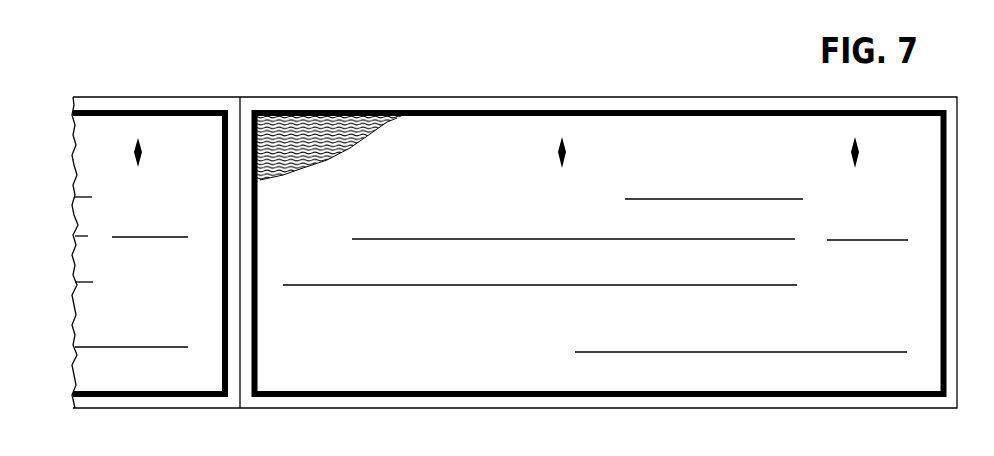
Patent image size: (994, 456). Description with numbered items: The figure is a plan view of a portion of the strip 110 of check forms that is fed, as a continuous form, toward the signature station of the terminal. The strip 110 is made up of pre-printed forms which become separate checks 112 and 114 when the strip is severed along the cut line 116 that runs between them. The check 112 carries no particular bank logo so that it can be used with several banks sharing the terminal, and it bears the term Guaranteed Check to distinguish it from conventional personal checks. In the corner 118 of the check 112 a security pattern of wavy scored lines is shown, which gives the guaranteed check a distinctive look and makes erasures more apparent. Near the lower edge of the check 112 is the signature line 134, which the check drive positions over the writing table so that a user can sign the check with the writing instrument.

The strip 110 is at (309, 92).
The check 112 is at (536, 95).
The check 114 is at (123, 95).
The cut line 116 is at (237, 108).
The corner 118 is at (354, 122).
The signature line 134 is at (790, 352).